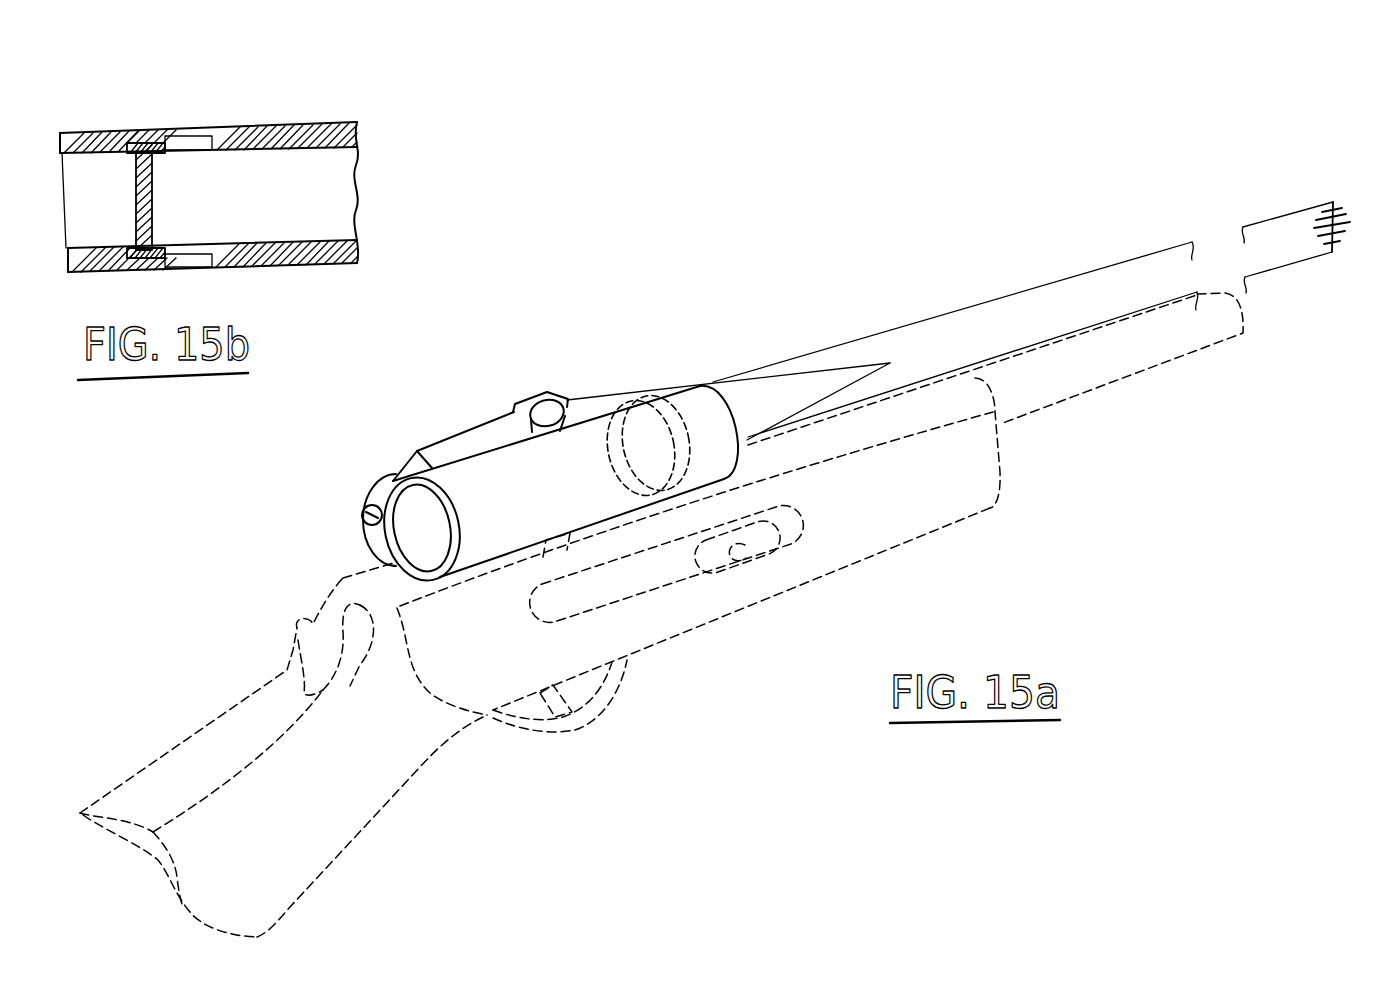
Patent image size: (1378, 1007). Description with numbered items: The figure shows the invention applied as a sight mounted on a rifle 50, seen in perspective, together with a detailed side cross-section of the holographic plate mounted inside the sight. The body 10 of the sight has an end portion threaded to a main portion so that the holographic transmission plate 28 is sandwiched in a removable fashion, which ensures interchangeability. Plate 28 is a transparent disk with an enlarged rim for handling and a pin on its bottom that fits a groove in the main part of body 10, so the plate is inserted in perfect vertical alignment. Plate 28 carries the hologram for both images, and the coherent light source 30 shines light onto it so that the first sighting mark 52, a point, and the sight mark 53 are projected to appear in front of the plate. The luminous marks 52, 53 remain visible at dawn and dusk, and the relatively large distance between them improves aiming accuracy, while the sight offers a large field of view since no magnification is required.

In FIG. 15b, the body 10 is at (295, 122).
In FIG. 15a, the body 10 is at (593, 435).
In FIG. 15b, the holographic transmission plate 28 is at (136, 177).
In FIG. 15a, the holographic transmission plate 28 is at (640, 427).
In FIG. 15a, the coherent light source 30 is at (449, 453).
In FIG. 15a, the firearm 50 is at (254, 586).
In FIG. 15a, the first sighting mark 52 is at (890, 363).
In FIG. 15a, the sight mark 53 is at (1338, 253).